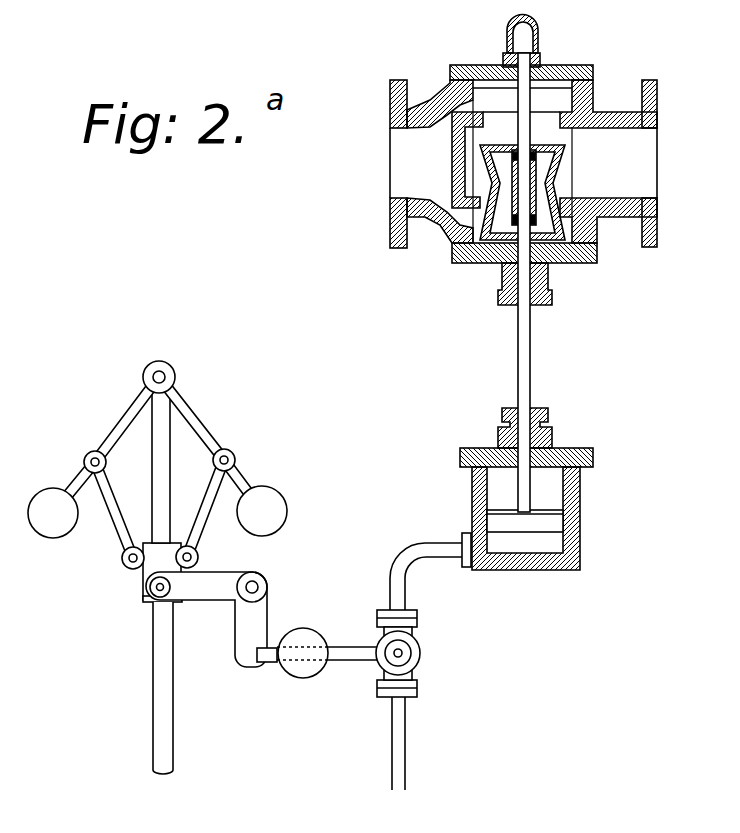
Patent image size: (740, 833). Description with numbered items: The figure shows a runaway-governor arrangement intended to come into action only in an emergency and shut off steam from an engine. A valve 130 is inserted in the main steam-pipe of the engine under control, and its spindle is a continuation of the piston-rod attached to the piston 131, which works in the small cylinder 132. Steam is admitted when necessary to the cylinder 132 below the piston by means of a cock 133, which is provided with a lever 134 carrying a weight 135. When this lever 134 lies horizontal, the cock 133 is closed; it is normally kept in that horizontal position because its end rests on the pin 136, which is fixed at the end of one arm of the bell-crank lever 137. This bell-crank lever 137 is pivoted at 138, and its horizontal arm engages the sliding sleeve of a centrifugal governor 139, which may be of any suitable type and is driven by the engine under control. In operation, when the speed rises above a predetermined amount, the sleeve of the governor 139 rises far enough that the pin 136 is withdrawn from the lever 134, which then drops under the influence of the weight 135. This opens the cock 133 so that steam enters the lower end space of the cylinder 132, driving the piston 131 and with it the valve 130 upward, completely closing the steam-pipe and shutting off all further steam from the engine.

The valve 130 is at (523, 159).
The piston 131 is at (525, 521).
The small cylinder 132 is at (542, 489).
The cock 133 is at (419, 653).
The lever 134 is at (354, 667).
The weight 135 is at (304, 642).
The pin 136 is at (254, 670).
The bell-crank lever 137 is at (206, 619).
The pivot 138 is at (259, 582).
The centrifugal governor 139 is at (157, 465).